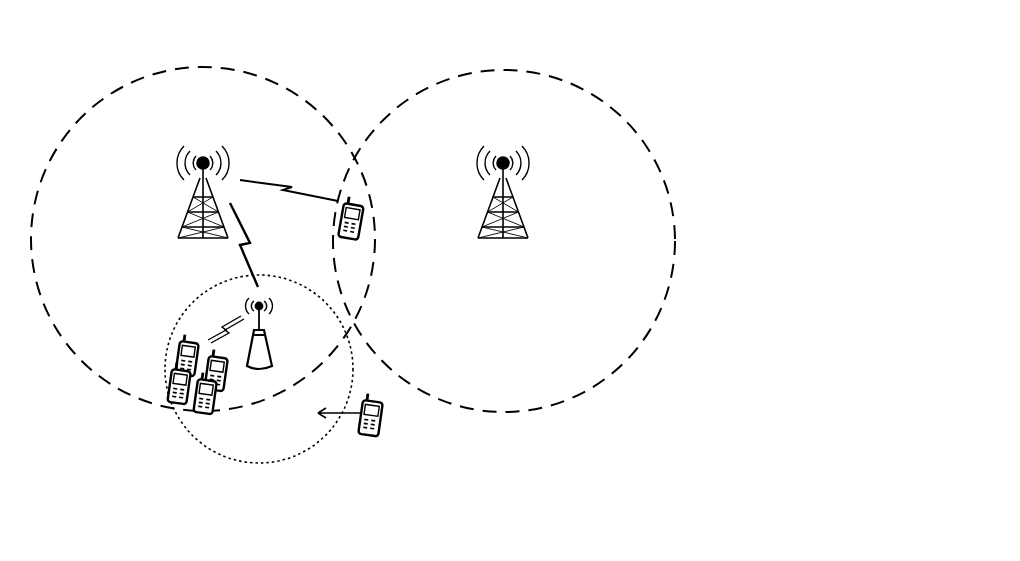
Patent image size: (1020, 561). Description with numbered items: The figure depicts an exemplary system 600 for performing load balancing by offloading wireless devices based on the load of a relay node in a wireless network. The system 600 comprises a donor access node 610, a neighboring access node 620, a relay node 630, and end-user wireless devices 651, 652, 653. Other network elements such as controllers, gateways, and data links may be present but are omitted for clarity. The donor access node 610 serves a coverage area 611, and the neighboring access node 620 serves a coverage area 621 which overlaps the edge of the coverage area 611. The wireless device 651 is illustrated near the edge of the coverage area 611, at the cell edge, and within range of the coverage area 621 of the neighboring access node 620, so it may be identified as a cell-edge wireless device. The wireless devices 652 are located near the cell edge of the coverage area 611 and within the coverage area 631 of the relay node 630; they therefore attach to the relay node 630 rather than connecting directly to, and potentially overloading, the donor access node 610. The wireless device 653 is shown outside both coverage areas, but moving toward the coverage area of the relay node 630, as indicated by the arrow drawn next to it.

The system 600 is at (639, 57).
The donor access node 610 is at (190, 217).
The coverage area 611 is at (108, 380).
The neighboring access node 620 is at (518, 217).
The coverage area 621 is at (597, 382).
The relay node 630 is at (268, 332).
The coverage area 631 is at (196, 437).
The wireless device 651 is at (360, 238).
The wireless devices 652 is at (176, 353).
The wireless device 653 is at (383, 430).